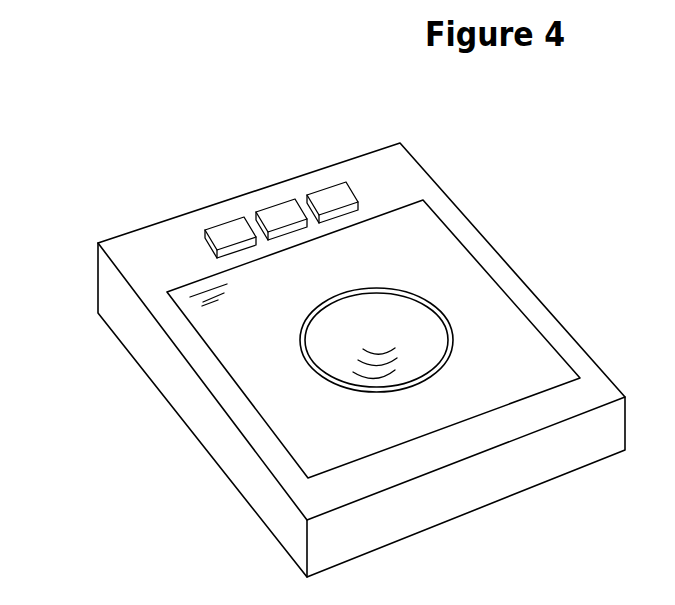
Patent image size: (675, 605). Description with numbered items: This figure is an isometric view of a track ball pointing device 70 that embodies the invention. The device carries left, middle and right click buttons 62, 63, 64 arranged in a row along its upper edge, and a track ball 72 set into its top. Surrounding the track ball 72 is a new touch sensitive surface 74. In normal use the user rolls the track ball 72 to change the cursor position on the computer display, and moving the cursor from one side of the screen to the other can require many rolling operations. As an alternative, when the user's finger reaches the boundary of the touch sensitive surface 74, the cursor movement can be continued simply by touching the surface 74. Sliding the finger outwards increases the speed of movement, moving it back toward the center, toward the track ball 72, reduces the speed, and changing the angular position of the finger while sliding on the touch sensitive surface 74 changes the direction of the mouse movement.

The track ball pointing device 70 is at (467, 487).
The track ball 72 is at (398, 312).
The touch sensitive surface 74 is at (410, 253).
The left click button 62 is at (228, 217).
The middle click button 63 is at (280, 198).
The right click button 64 is at (330, 185).